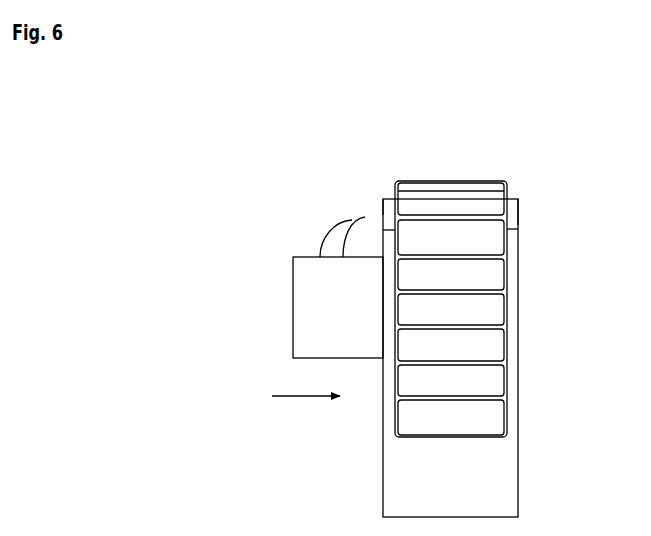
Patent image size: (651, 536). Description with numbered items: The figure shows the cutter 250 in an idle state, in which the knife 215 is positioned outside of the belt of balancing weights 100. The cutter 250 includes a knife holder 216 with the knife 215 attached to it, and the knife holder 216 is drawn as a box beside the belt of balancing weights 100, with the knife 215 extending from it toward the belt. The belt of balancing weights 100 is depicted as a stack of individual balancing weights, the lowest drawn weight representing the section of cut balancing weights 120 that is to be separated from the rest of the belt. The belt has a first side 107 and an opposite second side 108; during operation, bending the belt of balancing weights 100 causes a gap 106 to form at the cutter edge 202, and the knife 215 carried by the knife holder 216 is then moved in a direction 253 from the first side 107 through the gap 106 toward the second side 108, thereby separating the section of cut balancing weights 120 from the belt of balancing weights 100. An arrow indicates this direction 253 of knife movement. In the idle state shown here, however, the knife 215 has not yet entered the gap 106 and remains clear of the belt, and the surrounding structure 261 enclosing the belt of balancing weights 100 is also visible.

The belt of balancing weights 100 is at (451, 304).
The gap 106 is at (427, 222).
The first side 107 is at (383, 198).
The second side 108 is at (515, 212).
The section of cut balancing weights 120 is at (490, 420).
The cutter edge 202 is at (518, 229).
The knife 215 is at (341, 233).
The knife holder 216 is at (313, 303).
The cutter 250 is at (307, 251).
The direction 253 is at (295, 398).
The housing 261 is at (383, 222).